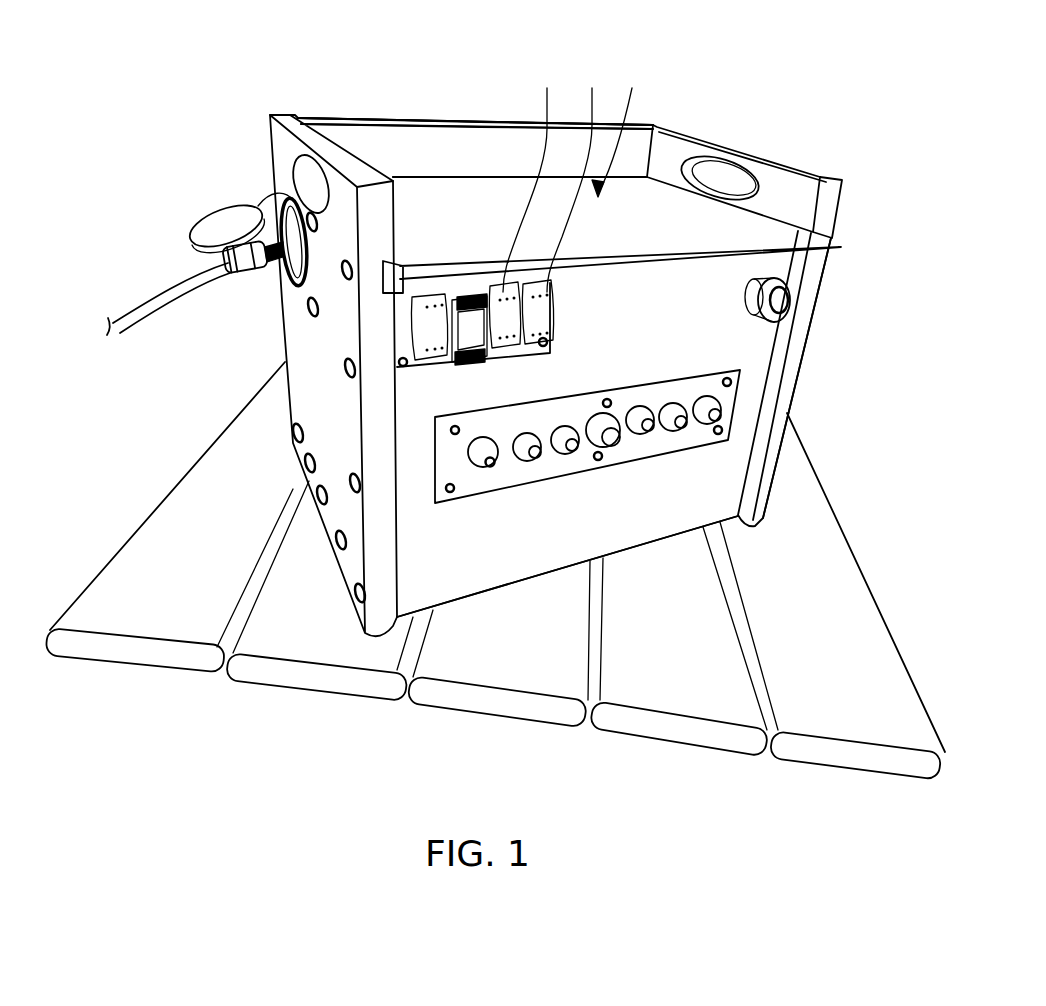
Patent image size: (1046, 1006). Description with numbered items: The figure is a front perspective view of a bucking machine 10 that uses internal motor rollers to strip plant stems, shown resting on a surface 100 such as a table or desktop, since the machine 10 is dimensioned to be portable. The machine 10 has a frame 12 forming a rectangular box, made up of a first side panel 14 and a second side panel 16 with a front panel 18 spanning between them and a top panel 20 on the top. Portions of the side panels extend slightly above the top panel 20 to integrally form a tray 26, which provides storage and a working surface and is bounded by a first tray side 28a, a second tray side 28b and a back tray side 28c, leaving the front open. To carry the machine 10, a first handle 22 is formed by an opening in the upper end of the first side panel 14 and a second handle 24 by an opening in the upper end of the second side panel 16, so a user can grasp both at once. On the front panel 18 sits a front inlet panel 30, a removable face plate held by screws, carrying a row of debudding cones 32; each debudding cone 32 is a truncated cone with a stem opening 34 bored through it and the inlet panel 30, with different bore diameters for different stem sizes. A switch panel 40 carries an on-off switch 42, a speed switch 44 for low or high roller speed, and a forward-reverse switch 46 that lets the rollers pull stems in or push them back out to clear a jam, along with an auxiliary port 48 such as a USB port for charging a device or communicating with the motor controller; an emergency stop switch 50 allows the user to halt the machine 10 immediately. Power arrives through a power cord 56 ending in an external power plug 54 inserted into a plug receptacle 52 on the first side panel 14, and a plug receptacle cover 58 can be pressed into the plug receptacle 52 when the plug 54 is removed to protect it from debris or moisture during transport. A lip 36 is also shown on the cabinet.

The bucking machine 10 is at (708, 47).
The frame 12 is at (350, 117).
The first side panel 14 is at (302, 383).
The second side panel 16 is at (793, 353).
The front panel 18 is at (648, 523).
The top panel 20 is at (468, 228).
The first handle 22 is at (297, 145).
The second handle 24 is at (703, 163).
The tray 26 is at (621, 129).
The first tray side 28a is at (398, 207).
The second tray side 28b is at (798, 195).
The back tray side 28c is at (507, 126).
The front inlet panel 30 is at (723, 400).
The debudding cone 32 is at (470, 424).
The stem opening 34 is at (491, 464).
The shelf lip 36 is at (833, 252).
The switch panel 40 is at (397, 351).
The on-off switch 42 is at (432, 323).
The speed switch 44 is at (575, 176).
The forward-reverse switch 46 is at (531, 177).
The auxiliary port 48 is at (470, 362).
The emergency stop switch 50 is at (788, 303).
The plug receptacle 52 is at (280, 190).
The external power plug 54 is at (270, 268).
The power cord 56 is at (140, 293).
The plug receptacle cover 58 is at (223, 220).
The surface 100 is at (170, 542).